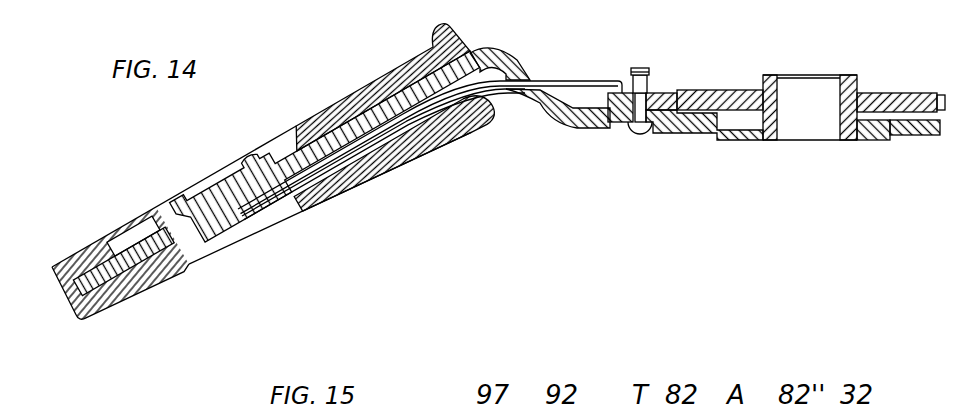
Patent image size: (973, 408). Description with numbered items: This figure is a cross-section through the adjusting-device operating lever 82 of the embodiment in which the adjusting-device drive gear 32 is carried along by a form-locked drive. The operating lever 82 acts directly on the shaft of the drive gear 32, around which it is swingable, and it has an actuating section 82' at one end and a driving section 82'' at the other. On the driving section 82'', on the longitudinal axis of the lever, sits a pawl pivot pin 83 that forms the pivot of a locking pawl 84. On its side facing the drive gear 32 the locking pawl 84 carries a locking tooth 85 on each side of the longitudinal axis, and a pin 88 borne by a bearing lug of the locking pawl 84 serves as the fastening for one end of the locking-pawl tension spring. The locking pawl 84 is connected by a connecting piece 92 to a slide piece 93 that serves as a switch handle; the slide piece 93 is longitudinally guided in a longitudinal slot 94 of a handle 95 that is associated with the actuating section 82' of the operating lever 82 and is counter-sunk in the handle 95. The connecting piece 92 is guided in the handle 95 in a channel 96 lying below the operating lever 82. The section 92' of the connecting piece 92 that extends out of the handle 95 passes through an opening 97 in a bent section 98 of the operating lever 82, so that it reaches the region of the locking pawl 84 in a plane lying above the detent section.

The longitudinal slot 94 is at (150, 227).
The actuating section 82' is at (123, 289).
The slide piece 93 is at (228, 202).
The handle 95 is at (328, 126).
The channel 96 is at (455, 110).
The connecting piece 92 is at (430, 115).
The section of the connecting piece 92' is at (398, 154).
The bent section 98 is at (500, 57).
The opening 97 is at (528, 78).
The locking pawl 84 is at (615, 114).
The pawl pivot pin 83 is at (643, 113).
The pin 88 is at (640, 80).
The locking tooth 85 is at (667, 97).
The adjusting-device operating lever 82 is at (704, 151).
The adjusting-device drive gear 32 is at (723, 90).
The driving section 82'' is at (920, 159).